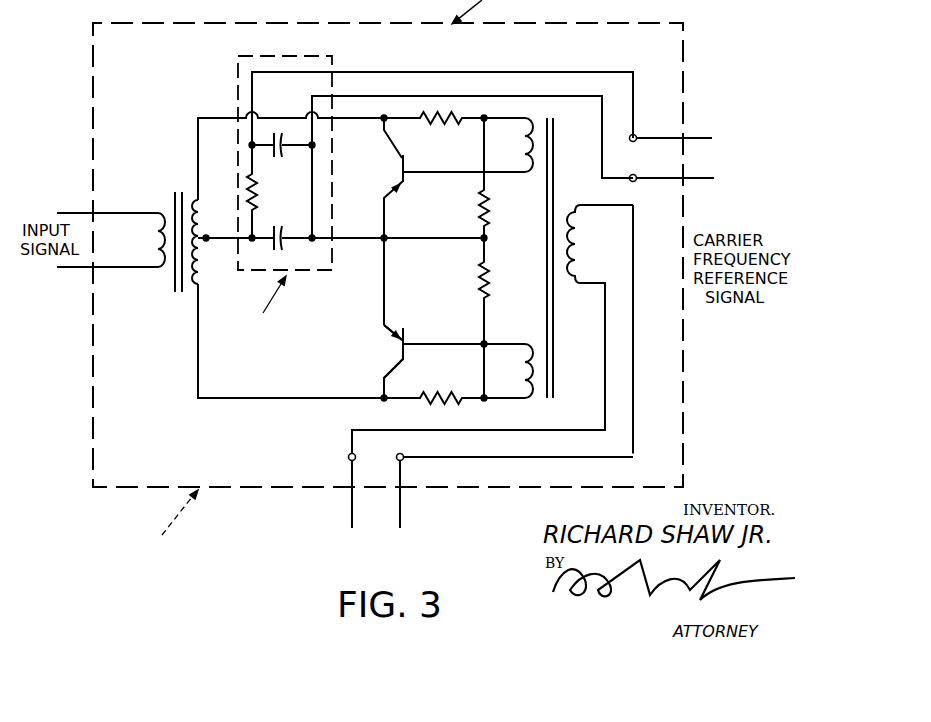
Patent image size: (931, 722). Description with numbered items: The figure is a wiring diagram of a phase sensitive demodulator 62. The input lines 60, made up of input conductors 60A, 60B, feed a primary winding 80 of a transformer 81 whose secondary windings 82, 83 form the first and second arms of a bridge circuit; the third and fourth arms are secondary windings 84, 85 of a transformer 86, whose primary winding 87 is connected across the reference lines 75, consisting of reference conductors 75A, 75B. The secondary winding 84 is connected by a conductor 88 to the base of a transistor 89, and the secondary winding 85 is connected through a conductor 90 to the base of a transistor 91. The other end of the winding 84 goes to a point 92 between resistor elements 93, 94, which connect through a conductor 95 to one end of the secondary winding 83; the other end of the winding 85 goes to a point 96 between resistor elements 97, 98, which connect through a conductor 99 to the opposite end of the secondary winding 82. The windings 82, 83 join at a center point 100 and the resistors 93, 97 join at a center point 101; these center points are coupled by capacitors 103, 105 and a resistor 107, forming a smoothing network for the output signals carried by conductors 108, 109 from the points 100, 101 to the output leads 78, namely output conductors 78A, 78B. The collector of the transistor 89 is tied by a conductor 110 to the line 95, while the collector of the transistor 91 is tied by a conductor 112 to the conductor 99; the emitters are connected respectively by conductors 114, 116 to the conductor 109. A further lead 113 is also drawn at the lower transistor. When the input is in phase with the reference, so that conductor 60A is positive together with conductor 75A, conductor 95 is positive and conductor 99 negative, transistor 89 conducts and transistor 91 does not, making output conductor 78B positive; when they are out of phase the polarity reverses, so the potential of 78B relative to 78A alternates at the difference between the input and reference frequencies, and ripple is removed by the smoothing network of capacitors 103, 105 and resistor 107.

The input lines 60 is at (101, 216).
The input conductor 60A is at (117, 211).
The input conductor 60B is at (100, 270).
The phase sensitive demodulator 62 is at (272, 488).
The reference lines 75 is at (400, 500).
The reference conductor 75A is at (350, 496).
The reference conductor 75B is at (402, 497).
The output leads 78 is at (688, 178).
The output conductor 78A is at (660, 122).
The output conductor 78B is at (650, 180).
The primary winding 80 is at (152, 244).
The transformer 81 is at (165, 287).
The secondary winding 82 is at (195, 290).
The secondary winding 83 is at (196, 205).
The secondary winding 84 is at (523, 150).
The secondary winding 85 is at (523, 375).
The transformer 86 is at (563, 160).
The primary winding 87 is at (583, 245).
The conductor 88 is at (456, 173).
The transistor 89 is at (392, 175).
The conductor 90 is at (443, 345).
The transistor 91 is at (410, 338).
The point 92 is at (487, 116).
The resistor element 93 is at (490, 211).
The resistor element 94 is at (445, 123).
The conductor 95 is at (197, 126).
The point 96 is at (487, 401).
The resistor element 97 is at (490, 284).
The resistor element 98 is at (443, 393).
The conductor 99 is at (197, 366).
The center point 100 is at (209, 236).
The center point 101 is at (490, 238).
The capacitor 103 is at (280, 227).
The capacitor 105 is at (280, 152).
The resistor 107 is at (249, 180).
The conductor 108 is at (385, 72).
The conductor 109 is at (413, 240).
The conductor 110 is at (379, 130).
The conductor 112 is at (385, 381).
The conductor 113 is at (393, 358).
The conductor 114 is at (388, 221).
The conductor 116 is at (387, 291).